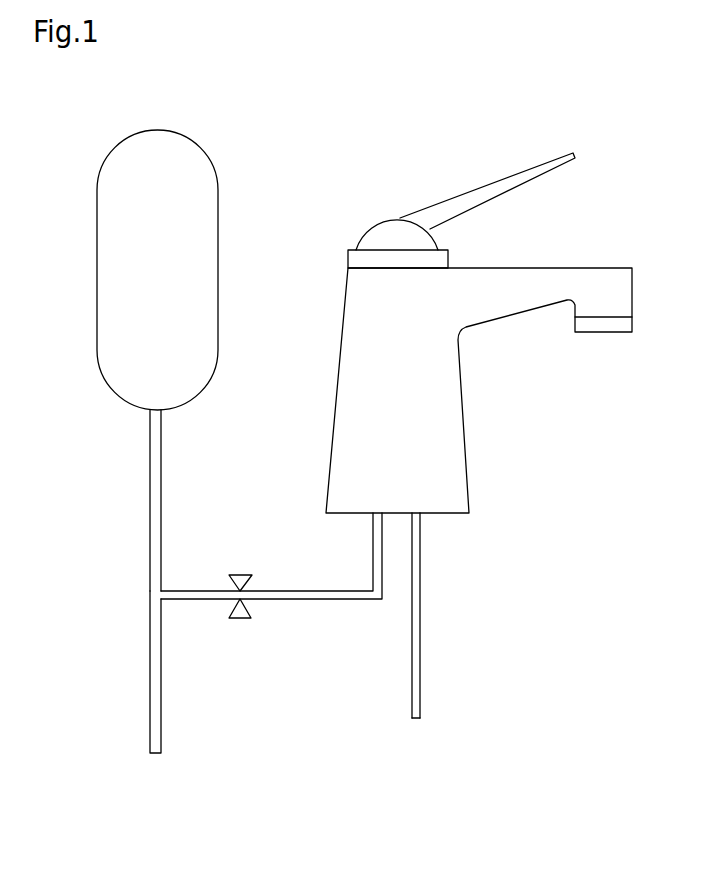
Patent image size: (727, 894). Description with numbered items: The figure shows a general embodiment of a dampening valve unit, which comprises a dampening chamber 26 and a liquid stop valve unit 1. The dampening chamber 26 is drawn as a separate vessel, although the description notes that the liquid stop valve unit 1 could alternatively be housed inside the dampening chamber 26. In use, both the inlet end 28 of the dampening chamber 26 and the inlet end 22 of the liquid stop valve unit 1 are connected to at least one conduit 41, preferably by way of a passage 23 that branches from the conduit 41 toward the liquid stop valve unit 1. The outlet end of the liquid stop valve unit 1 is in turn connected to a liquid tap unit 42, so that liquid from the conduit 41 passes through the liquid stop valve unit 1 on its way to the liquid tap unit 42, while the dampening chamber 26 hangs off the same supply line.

The liquid stop valve unit 1 is at (247, 637).
The inlet end of the liquid stop valve unit 22 is at (233, 599).
The passage 23 is at (150, 598).
The dampening chamber 26 is at (190, 237).
The inlet end of the dampening chamber 28 is at (148, 413).
The conduit 41 is at (149, 733).
The liquid tap unit 42 is at (525, 285).